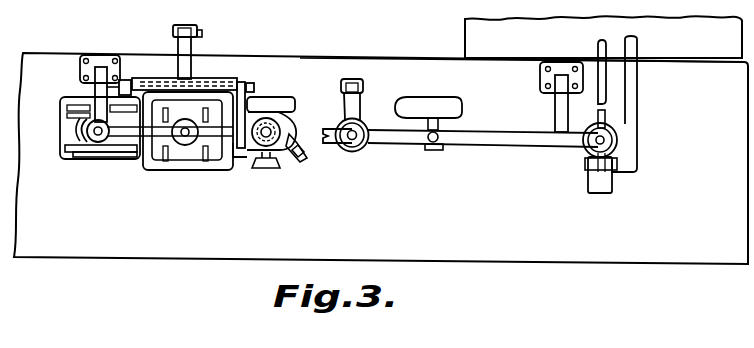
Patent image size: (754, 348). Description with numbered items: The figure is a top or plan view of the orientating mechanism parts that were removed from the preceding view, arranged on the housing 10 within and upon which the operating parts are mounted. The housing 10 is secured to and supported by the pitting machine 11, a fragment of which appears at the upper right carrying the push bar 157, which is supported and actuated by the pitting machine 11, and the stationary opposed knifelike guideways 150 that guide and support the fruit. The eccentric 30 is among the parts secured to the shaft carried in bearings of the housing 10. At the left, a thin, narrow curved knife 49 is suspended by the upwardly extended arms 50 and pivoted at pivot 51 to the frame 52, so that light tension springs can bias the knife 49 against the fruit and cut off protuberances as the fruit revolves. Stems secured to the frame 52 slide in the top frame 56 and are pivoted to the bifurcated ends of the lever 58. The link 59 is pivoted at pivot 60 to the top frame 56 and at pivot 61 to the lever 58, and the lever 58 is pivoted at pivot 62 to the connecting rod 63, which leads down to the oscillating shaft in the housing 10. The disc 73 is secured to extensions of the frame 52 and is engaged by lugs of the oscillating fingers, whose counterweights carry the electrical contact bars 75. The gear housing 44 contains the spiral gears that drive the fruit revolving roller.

The housing 10 is at (377, 220).
The pitting machine 11 is at (478, 35).
The eccentric 30 is at (24, 8).
The gear housing 44 is at (447, 103).
The knife 49 is at (78, 133).
The arms 50 is at (81, 153).
The pivot 51 is at (69, 153).
The frame 52 is at (266, 105).
The top frame 56 is at (392, 139).
The lever 58 is at (192, 48).
The link 59 is at (138, 79).
The pivot 60 is at (127, 80).
The pivot 61 is at (100, 67).
The pivot 62 is at (203, 33).
The connecting rod 63 is at (197, 27).
The disc 73 is at (291, 121).
The electrical contact bars 75 is at (298, 153).
The knifelike guideways 150 is at (600, 47).
The push bar 157 is at (633, 92).